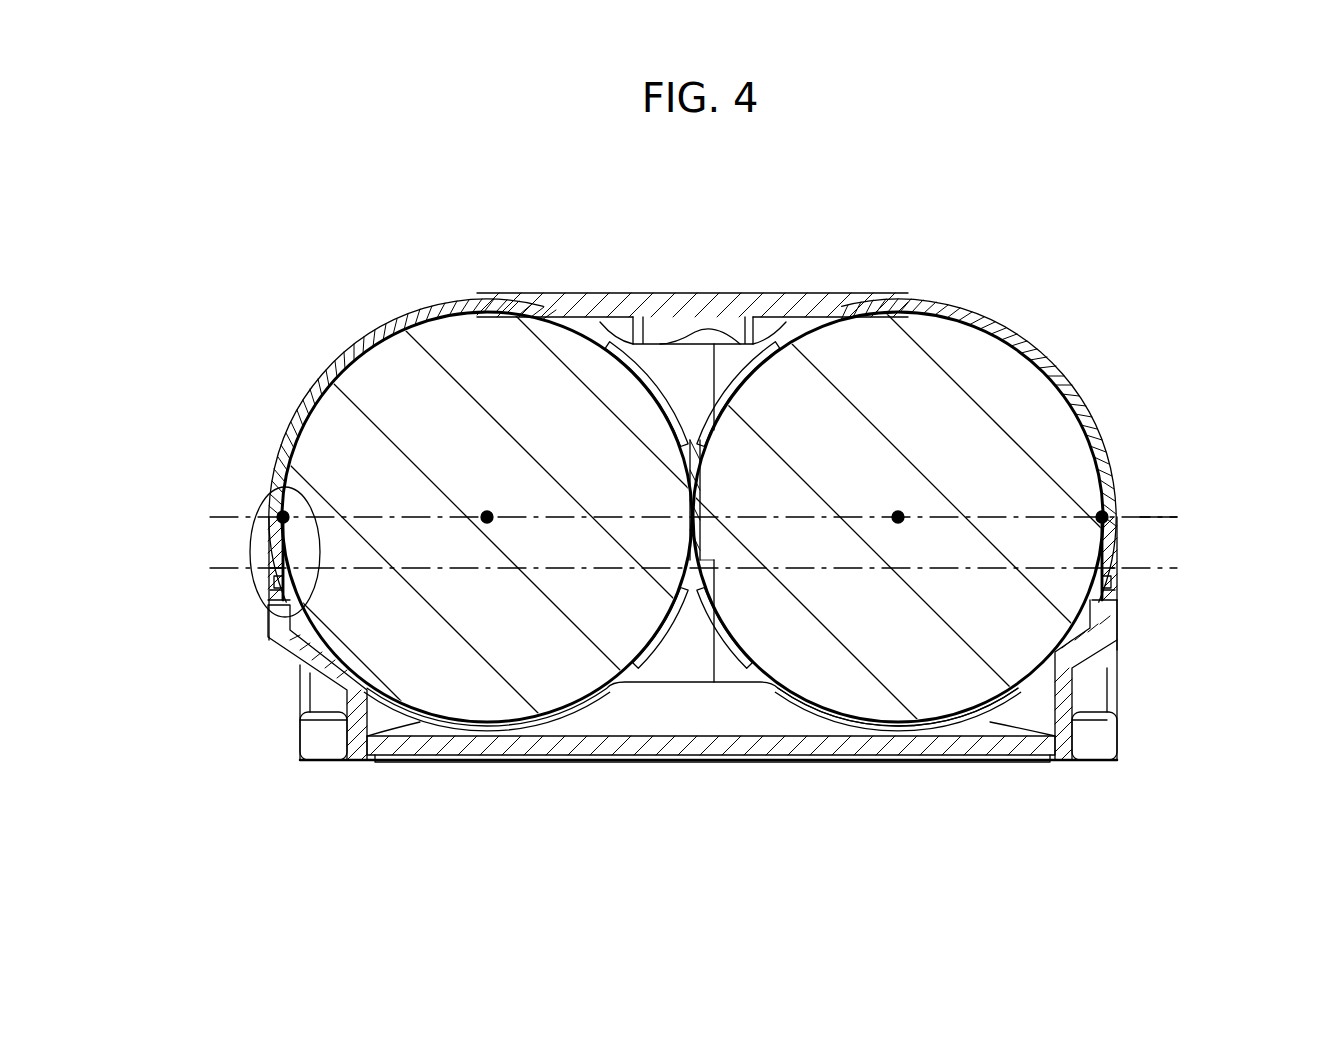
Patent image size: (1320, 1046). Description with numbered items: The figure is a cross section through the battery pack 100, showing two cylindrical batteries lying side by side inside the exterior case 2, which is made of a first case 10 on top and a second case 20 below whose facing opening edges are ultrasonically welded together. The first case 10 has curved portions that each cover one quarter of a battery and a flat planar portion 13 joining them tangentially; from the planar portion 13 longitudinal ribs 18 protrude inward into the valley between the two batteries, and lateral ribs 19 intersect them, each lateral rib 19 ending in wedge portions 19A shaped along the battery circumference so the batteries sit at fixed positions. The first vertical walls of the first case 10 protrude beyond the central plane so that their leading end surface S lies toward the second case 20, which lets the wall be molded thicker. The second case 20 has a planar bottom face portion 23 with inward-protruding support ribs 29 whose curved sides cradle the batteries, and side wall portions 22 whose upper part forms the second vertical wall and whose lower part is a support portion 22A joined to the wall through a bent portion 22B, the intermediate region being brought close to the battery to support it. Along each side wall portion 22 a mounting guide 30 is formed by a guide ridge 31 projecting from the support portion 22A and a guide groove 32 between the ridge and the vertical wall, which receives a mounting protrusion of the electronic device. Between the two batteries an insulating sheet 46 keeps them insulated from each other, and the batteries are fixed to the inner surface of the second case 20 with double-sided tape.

The battery pack 100 is at (1066, 250).
The exterior case 2 is at (136, 324).
The first case 10 is at (312, 358).
The planar portion 13 is at (720, 300).
The longitudinal rib 18 is at (633, 332).
The lateral rib 19 is at (662, 332).
The wedge portion 19A is at (600, 322).
The second case 20 is at (292, 672).
The side wall portion 22 is at (1240, 652).
The support portion 22A is at (1120, 745).
The bent portion 22B is at (1120, 698).
The bottom face portion 23 is at (710, 748).
The support rib 29 is at (633, 705).
The mounting guide 30 is at (184, 715).
The guide ridge 31 is at (300, 750).
The guide groove 32 is at (303, 716).
The insulating sheet 46 is at (690, 428).
The leading end surface S is at (810, 560).